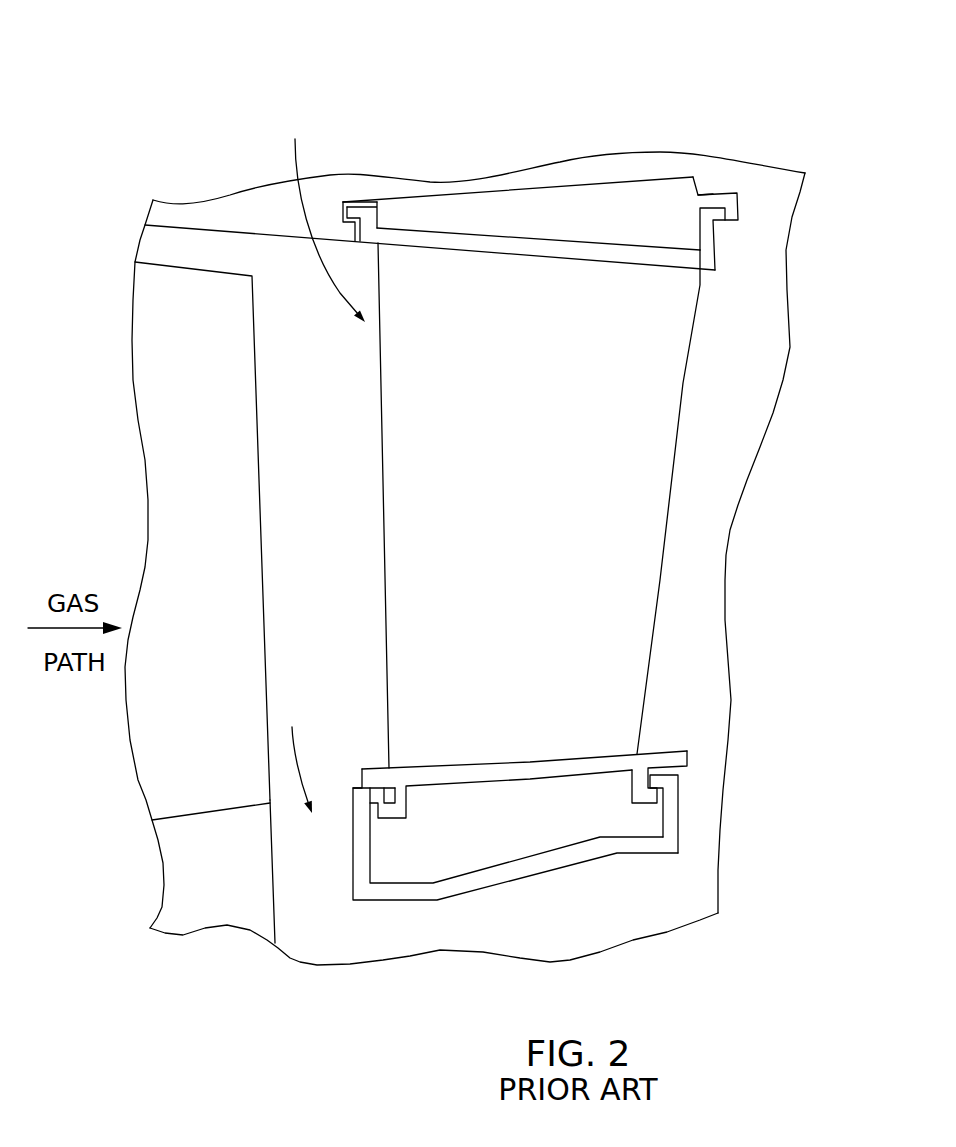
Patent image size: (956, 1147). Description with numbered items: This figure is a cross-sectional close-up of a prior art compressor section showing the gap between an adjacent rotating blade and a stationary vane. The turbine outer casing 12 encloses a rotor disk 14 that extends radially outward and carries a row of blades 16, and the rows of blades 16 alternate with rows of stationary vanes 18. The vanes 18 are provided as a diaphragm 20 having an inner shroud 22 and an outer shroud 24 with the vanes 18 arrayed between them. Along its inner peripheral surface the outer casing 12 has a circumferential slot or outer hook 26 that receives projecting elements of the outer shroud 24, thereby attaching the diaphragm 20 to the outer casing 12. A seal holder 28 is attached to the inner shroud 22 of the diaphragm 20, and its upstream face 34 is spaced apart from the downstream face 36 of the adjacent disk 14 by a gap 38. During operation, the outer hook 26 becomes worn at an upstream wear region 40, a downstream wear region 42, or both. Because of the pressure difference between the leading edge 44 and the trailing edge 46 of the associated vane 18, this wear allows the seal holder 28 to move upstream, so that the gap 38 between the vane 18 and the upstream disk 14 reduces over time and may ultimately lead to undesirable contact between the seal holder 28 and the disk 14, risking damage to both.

The outer casing 12 is at (265, 205).
The disk 14 is at (190, 892).
The blade 16 is at (173, 564).
The vane 18 is at (553, 505).
The diaphragm 20 is at (322, 219).
The inner shroud 22 is at (677, 760).
The outer shroud 24 is at (538, 144).
The outer hook 26 is at (352, 201).
The seal holder 28 is at (523, 795).
The upstream face 34 is at (348, 800).
The downstream face 36 is at (273, 878).
The gap 38 is at (295, 758).
The upstream wear region 40 is at (365, 198).
The downstream wear region 42 is at (713, 190).
The leading edge 44 is at (382, 445).
The trailing edge 46 is at (685, 383).